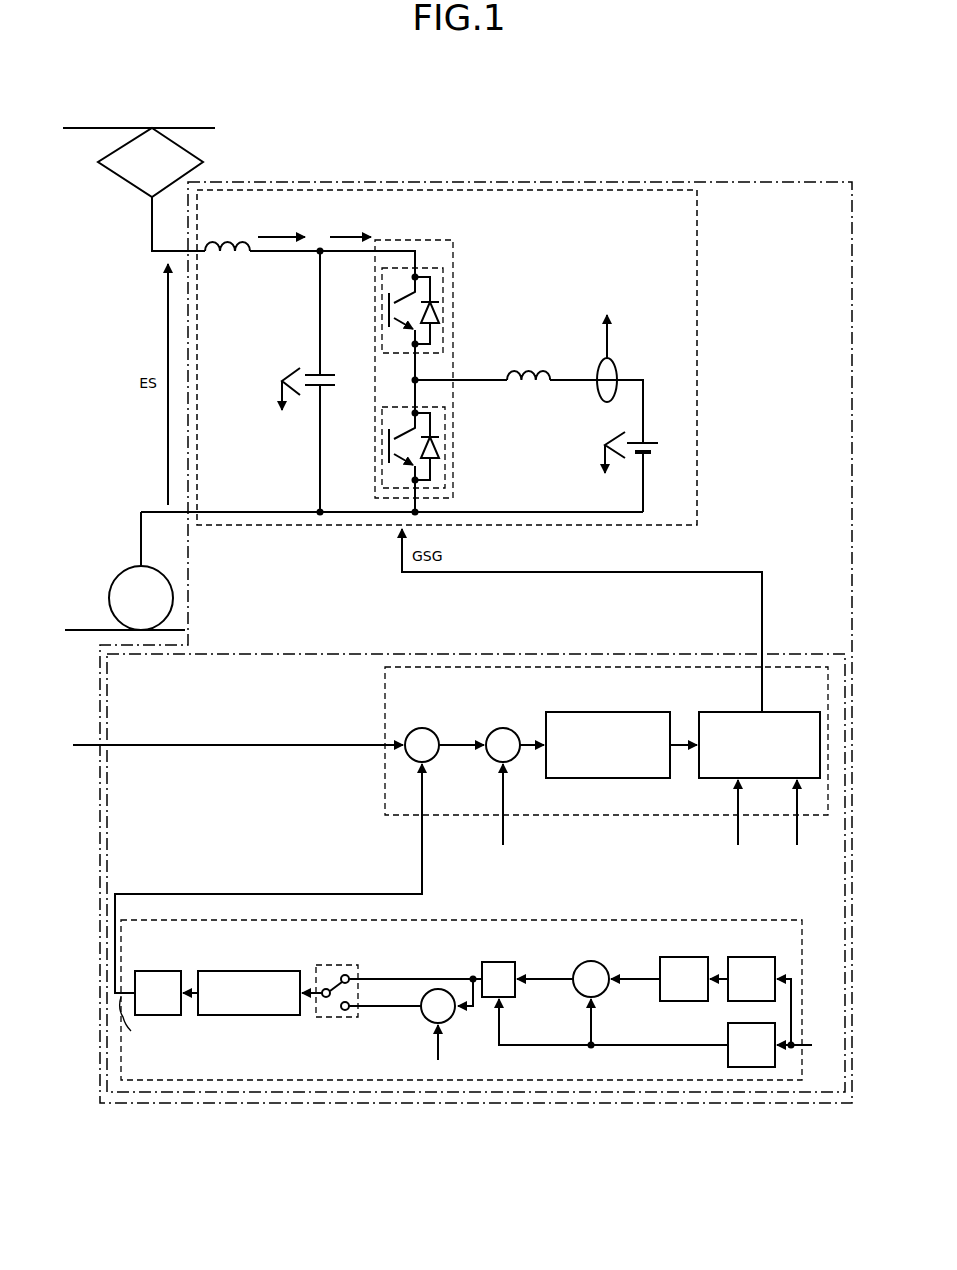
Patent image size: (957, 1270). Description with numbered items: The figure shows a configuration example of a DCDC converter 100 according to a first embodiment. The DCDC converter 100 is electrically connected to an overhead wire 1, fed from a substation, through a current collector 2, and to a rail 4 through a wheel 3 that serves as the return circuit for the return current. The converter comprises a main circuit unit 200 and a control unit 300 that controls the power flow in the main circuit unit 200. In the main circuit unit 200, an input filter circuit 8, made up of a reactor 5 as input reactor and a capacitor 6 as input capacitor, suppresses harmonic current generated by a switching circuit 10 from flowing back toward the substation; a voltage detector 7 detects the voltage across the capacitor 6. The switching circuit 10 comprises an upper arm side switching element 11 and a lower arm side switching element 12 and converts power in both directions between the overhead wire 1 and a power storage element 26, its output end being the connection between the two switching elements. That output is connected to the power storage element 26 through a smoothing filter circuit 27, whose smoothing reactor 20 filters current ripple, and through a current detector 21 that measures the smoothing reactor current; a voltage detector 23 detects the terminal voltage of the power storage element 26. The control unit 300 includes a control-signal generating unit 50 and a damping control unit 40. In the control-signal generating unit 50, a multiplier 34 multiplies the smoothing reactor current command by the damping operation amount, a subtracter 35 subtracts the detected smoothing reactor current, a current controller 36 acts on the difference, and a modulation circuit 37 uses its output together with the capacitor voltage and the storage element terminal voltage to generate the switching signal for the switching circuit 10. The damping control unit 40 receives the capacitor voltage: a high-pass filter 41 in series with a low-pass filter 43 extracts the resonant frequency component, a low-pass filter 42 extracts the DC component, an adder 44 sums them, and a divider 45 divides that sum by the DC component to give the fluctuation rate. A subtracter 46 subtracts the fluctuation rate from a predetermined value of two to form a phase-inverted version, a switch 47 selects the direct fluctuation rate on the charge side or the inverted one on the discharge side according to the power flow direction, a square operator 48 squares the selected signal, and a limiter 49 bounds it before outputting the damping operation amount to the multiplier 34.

The overhead wire 1 is at (205, 128).
The current collector 2 is at (203, 162).
The wheel 3 is at (124, 569).
The rail 4 is at (92, 628).
The reactor 5 is at (226, 256).
The capacitor 6 is at (336, 376).
The voltage detector 7 is at (280, 381).
The input filter circuit 8 is at (314, 235).
The switching circuit 10 is at (431, 362).
The upper arm side switching element 11 is at (443, 282).
The lower arm side switching element 12 is at (445, 418).
The smoothing reactor 20 is at (526, 360).
The current detector 21 is at (618, 366).
The voltage detector 23 is at (604, 445).
The power storage element 26 is at (651, 441).
The smoothing filter circuit 27 is at (546, 385).
The multiplier 34 is at (422, 727).
The subtracter 35 is at (507, 728).
The current controller 36 is at (645, 712).
The modulation circuit 37 is at (793, 712).
The damping control unit 40 is at (527, 920).
The high-pass filter 41 is at (751, 957).
The low-pass filter 42 is at (728, 1028).
The low-pass filter 43 is at (681, 957).
The adder 44 is at (591, 960).
The divider 45 is at (497, 962).
The subtracter 46 is at (450, 1022).
The switch 47 is at (318, 965).
The square operator 48 is at (247, 971).
The limiter 49 is at (163, 971).
The control-signal generating unit 50 is at (384, 690).
The DCDC converter 100 is at (767, 182).
The main circuit unit 200 is at (698, 210).
The control unit 300 is at (663, 654).